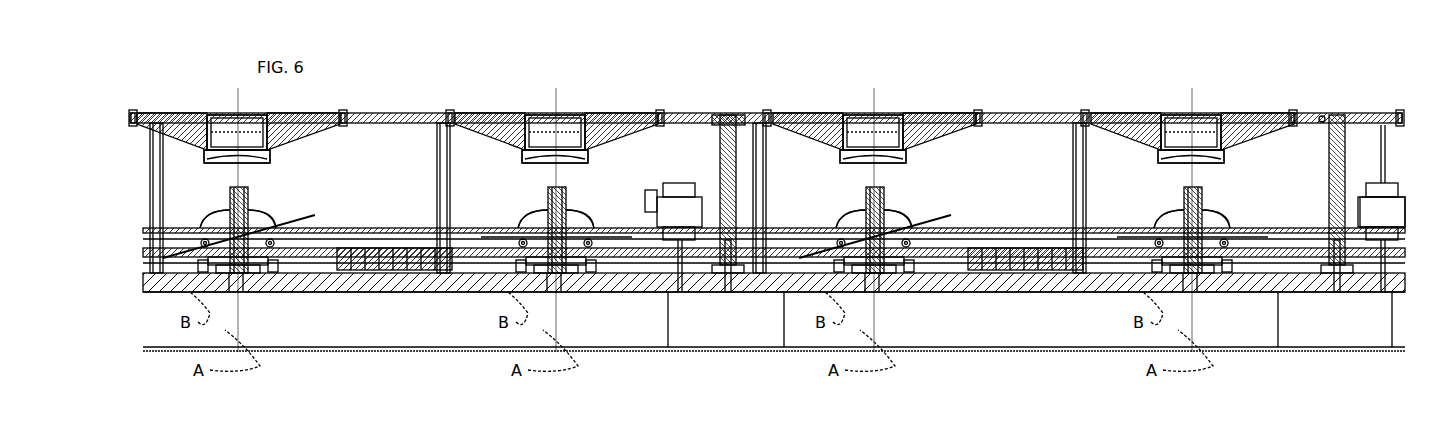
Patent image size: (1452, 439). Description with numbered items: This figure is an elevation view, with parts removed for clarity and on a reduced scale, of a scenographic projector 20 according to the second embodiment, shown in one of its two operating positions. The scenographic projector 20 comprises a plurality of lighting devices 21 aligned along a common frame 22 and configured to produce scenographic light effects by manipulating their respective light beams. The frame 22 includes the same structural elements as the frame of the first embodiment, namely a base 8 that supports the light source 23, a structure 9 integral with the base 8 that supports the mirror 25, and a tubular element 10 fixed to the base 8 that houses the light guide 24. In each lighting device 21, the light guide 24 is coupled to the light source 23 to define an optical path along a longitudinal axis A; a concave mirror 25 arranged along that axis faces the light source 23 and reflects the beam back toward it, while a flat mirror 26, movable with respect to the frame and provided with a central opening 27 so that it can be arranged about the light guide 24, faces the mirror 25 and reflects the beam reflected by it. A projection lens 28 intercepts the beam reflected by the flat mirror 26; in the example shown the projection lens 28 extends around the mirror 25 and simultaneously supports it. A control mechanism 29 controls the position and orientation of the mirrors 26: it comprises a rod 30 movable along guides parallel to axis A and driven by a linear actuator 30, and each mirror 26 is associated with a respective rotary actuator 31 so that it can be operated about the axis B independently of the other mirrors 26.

The base 8 is at (985, 300).
The structure 9 is at (410, 112).
The tubular element 10 is at (255, 205).
The scenographic projector 20 is at (1362, 62).
The lighting device 21 is at (214, 105).
The frame 22 is at (1420, 325).
The light source 23 is at (244, 285).
The light guide 24 is at (250, 222).
The mirror 25 is at (218, 163).
The mirror 26 is at (178, 246).
The central opening 27 is at (180, 248).
The projection lens 28 is at (263, 116).
The control mechanism 29 is at (1418, 212).
The rod / linear actuator 30 is at (695, 175).
The rotary actuator 31 is at (285, 244).